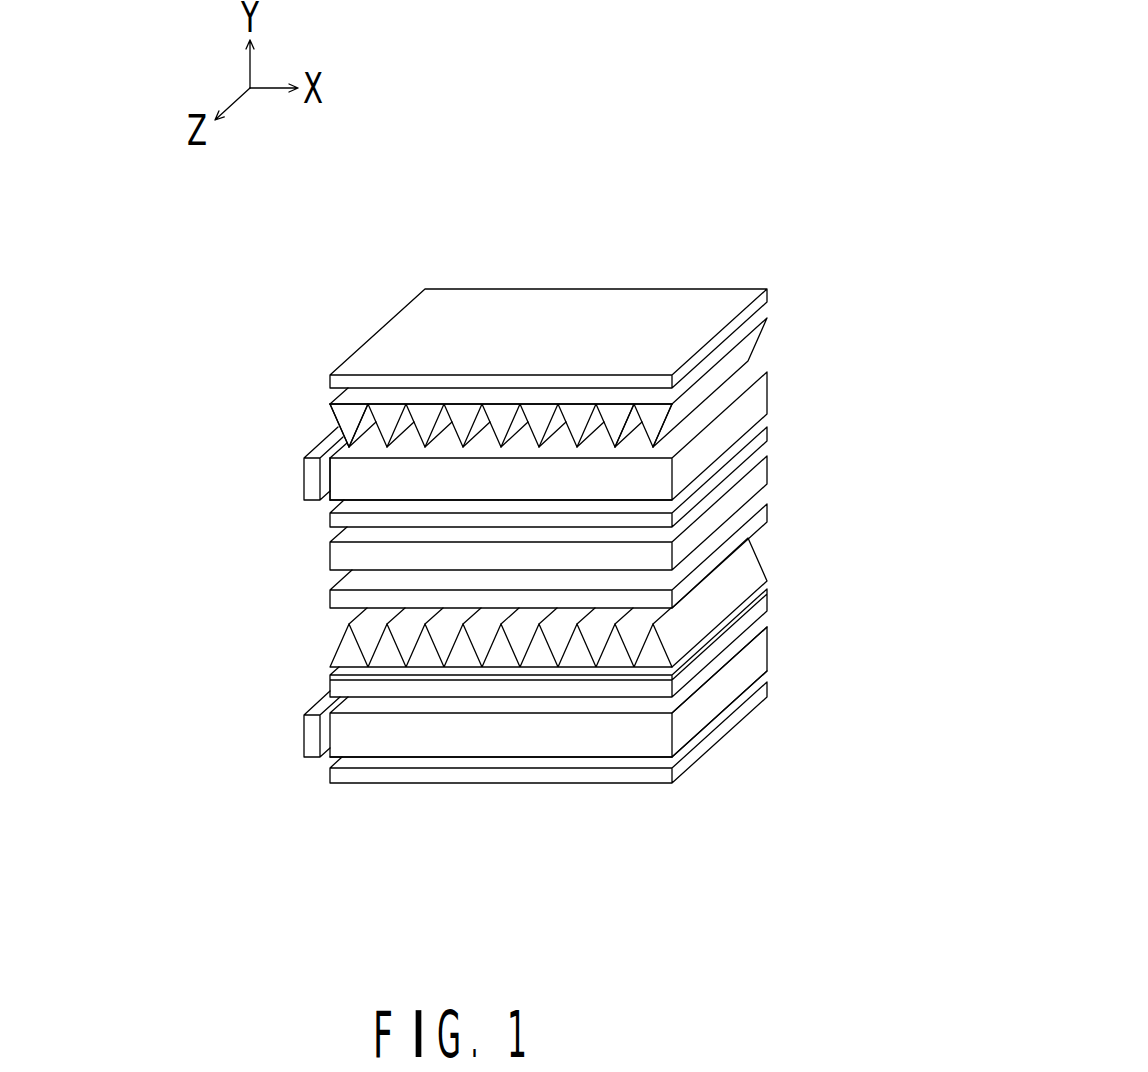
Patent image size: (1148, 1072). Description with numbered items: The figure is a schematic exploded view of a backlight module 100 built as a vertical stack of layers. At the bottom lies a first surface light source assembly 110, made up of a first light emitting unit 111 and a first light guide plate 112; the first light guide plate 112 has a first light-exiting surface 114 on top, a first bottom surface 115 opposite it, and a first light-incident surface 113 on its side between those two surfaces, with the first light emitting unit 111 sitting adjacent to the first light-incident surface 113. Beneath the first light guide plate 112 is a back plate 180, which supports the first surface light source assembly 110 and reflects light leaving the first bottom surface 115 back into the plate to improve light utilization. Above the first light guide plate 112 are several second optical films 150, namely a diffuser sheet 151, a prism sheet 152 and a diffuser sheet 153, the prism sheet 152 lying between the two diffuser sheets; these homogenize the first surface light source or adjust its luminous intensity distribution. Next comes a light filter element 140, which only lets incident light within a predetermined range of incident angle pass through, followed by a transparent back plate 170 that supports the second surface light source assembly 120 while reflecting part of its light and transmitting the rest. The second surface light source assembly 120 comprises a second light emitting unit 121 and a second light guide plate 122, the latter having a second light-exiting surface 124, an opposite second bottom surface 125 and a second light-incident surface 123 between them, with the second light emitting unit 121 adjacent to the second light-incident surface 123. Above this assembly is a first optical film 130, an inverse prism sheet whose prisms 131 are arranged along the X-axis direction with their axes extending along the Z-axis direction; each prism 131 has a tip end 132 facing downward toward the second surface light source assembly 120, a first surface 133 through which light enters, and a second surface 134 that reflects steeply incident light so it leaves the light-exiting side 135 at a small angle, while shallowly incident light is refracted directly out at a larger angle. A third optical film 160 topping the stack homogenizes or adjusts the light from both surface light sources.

The backlight module 100 is at (785, 925).
The first surface light source assembly 110 is at (206, 800).
The first light emitting unit 111 is at (311, 738).
The first light guide plate 112 is at (331, 752).
The first light-incident surface 113 is at (303, 742).
The first light-exiting surface 114 is at (638, 703).
The first bottom surface 115 is at (633, 768).
The second surface light source assembly 120 is at (206, 410).
The second light emitting unit 121 is at (310, 472).
The second light guide plate 122 is at (324, 455).
The second light-incident surface 123 is at (317, 479).
The second light-exiting surface 124 is at (492, 448).
The second bottom surface 125 is at (647, 511).
The first optical film 130 is at (712, 384).
The prism 131 is at (343, 417).
The tip end 132 is at (665, 453).
The first surface 133 is at (629, 421).
The second surface 134 is at (670, 413).
The light-exiting side 135 is at (432, 395).
The light filter element 140 is at (332, 557).
The second optical film 150 is at (437, 622).
The diffuser sheet 151 is at (332, 690).
The prism sheet 152 is at (332, 642).
The diffuser sheet 153 is at (332, 600).
The third optical film 160 is at (343, 382).
The transparent back plate 170 is at (332, 520).
The back plate 180 is at (412, 777).